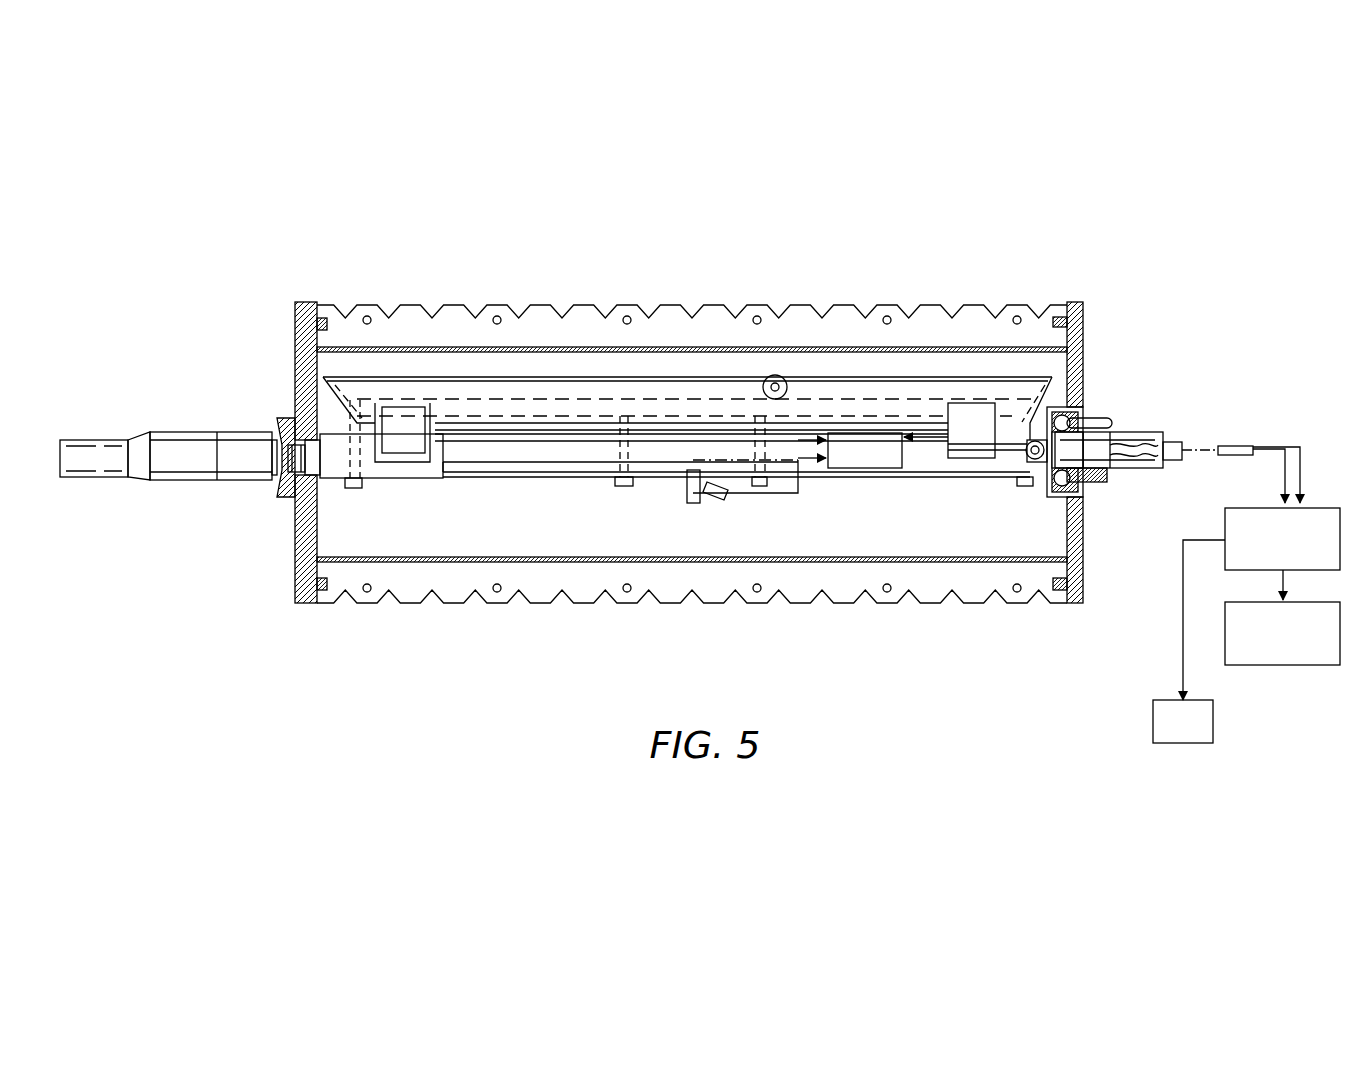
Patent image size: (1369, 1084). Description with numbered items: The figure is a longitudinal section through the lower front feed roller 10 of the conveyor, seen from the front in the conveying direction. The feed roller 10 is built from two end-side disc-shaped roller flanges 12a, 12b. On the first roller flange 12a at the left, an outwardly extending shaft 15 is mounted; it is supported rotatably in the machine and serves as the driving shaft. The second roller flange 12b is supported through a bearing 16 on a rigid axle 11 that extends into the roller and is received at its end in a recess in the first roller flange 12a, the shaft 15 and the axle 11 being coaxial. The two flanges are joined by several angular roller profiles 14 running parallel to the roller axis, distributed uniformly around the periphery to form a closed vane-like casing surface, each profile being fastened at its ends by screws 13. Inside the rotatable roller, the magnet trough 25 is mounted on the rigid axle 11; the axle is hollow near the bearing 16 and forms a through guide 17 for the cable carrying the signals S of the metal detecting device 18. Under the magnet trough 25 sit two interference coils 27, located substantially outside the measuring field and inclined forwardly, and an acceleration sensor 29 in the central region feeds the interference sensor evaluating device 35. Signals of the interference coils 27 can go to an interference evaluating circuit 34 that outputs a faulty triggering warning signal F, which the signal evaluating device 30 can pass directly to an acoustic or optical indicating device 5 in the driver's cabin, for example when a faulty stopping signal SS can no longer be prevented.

The feed roller 10 is at (1104, 270).
The rigid axle 11 is at (485, 463).
The first roller flange 12a is at (295, 378).
The second roller flange 12b is at (1083, 378).
The screws 13 is at (321, 318).
The angular roller profiles 14 is at (410, 306).
The shaft 15 is at (250, 470).
The bearing 16 is at (1090, 487).
The through guide 17 is at (1133, 440).
The metal detecting device 18 is at (543, 370).
The magnet trough 25 is at (663, 388).
The interference coils 27 is at (685, 432).
The acceleration sensor 29 is at (677, 482).
The signal evaluating device 30 is at (1282, 539).
The interference evaluating circuit 34 is at (1282, 633).
The interference sensor evaluating device 35 is at (912, 450).
The acoustic or optical indicating device 5 is at (1183, 721).
The faulty triggering warning signal F is at (930, 440).
The signals S is at (1302, 466).
The faulty stopping signal SS is at (1283, 577).